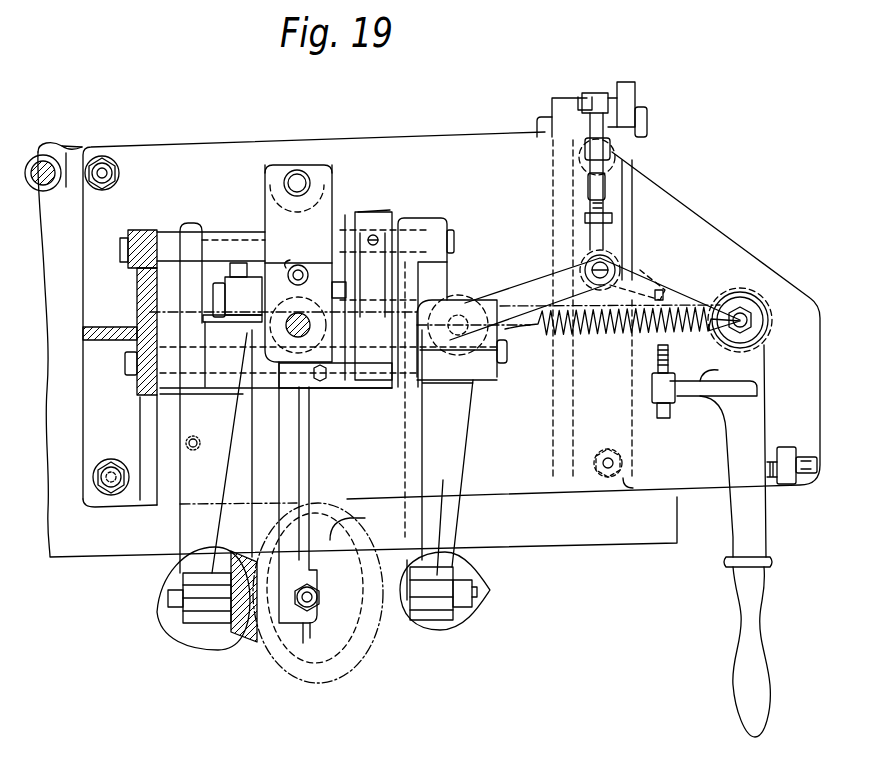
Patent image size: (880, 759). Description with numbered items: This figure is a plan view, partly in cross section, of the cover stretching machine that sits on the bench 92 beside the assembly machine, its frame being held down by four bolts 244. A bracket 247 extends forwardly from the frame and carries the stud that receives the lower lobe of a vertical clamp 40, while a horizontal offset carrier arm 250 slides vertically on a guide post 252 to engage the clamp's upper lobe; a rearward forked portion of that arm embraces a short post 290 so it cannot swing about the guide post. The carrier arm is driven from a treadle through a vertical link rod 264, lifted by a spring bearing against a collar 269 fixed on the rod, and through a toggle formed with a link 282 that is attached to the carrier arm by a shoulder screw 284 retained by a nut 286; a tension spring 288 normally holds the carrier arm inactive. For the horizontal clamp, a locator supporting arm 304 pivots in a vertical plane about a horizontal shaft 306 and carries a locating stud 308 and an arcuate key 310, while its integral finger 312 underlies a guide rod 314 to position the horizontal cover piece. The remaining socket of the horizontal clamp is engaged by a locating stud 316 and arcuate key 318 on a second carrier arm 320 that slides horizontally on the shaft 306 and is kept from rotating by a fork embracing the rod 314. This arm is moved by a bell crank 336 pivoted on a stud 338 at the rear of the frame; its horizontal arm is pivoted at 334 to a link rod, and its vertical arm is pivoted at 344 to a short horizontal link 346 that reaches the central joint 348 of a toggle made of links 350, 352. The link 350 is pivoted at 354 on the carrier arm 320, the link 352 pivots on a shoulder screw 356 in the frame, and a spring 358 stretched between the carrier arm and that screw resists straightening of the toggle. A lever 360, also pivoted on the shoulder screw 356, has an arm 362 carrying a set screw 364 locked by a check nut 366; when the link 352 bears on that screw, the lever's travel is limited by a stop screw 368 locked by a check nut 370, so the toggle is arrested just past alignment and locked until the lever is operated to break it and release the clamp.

The clamp 40 is at (333, 510).
The bench 92 is at (80, 559).
The bolts 244 is at (107, 169).
The bracket 247 is at (340, 546).
The carrier arm 250 is at (280, 462).
The guide post 252 is at (311, 327).
The link rod 264 is at (42, 156).
The collar 269 is at (68, 147).
The link 282 is at (237, 264).
The shoulder screw 284 is at (217, 312).
The nut 286 is at (355, 248).
The tension spring 288 is at (313, 270).
The short post 290 is at (297, 168).
The locator supporting arm 304 is at (182, 528).
The shaft 306 is at (124, 378).
The locating stud 308 is at (252, 600).
The arcuate key 310 is at (165, 612).
The finger 312 is at (191, 227).
The guide rod 314 is at (338, 236).
The locating stud 316 is at (400, 612).
The arcuate key 318 is at (470, 598).
The carrier arm 320 is at (466, 453).
The pivotal connection 334 is at (664, 286).
The bell crank 336 is at (626, 82).
The stud 338 is at (648, 124).
The pivotal connection 344 is at (584, 104).
The horizontal link 346 is at (607, 192).
The central joint 348 is at (606, 263).
The toggle link 350 is at (515, 278).
The toggle link 352 is at (716, 290).
The pivotal connection 354 is at (463, 305).
The shoulder screw 356 is at (755, 326).
The spring 358 is at (510, 340).
The lever 360 is at (733, 545).
The arm 362 is at (678, 400).
The set screw 364 is at (660, 416).
The check nut 366 is at (652, 404).
The stop screw 368 is at (772, 478).
The check nut 370 is at (802, 448).